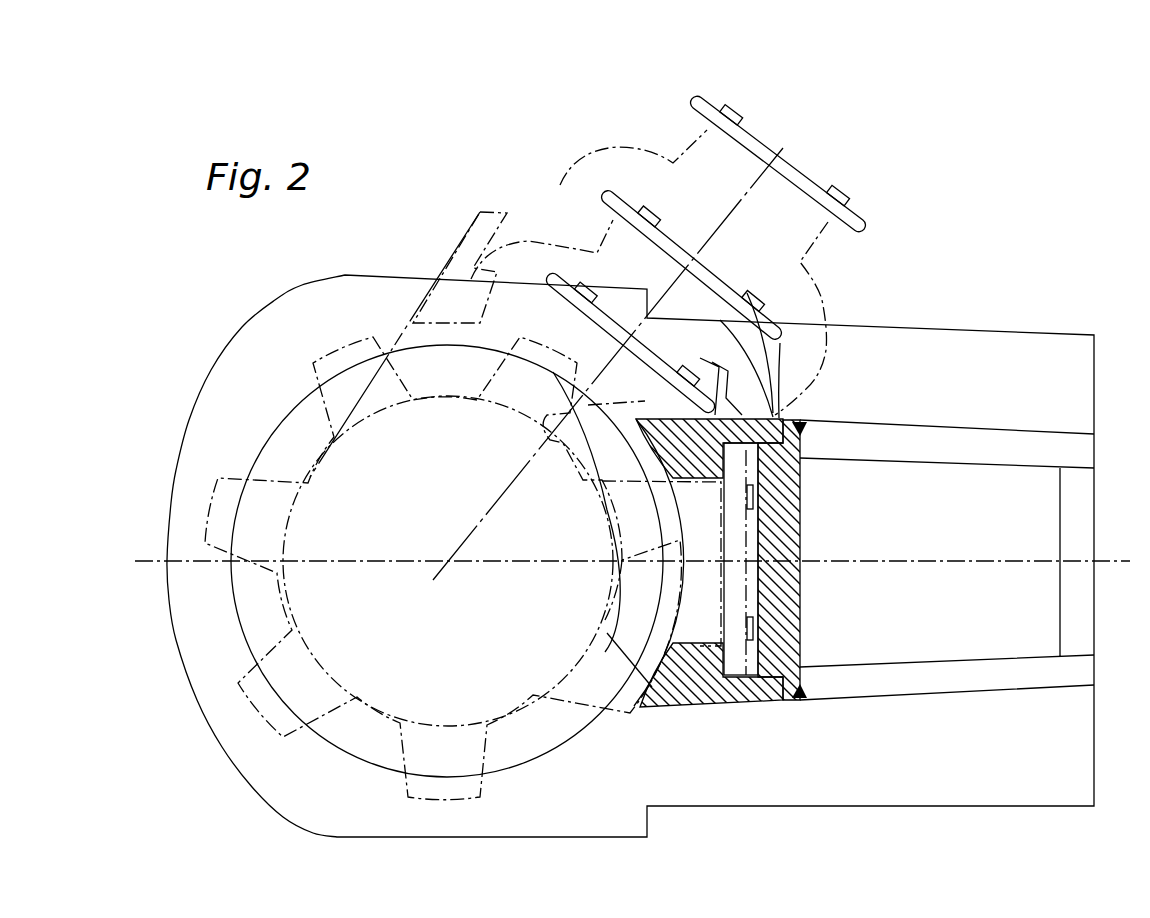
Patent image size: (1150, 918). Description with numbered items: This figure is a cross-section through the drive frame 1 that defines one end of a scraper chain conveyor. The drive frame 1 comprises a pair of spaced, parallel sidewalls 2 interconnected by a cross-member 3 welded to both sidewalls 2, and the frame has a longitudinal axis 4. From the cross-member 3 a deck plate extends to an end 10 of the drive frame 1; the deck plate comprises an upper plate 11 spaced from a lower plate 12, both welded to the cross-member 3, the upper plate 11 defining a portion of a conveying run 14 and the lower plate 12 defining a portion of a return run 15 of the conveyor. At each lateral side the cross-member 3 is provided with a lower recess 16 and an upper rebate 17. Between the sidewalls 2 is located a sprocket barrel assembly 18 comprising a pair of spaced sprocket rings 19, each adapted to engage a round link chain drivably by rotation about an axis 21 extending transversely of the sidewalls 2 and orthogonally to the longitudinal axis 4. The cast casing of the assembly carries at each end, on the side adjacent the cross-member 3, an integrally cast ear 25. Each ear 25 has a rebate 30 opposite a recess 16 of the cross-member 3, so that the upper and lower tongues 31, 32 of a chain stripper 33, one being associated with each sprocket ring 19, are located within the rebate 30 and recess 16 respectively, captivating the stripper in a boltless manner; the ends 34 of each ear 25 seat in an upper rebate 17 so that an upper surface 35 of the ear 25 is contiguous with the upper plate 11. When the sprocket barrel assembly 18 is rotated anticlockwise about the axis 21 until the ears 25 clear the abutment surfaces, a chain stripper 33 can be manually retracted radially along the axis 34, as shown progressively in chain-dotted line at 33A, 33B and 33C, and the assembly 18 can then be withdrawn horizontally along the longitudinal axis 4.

The drive frame 1 is at (919, 311).
The sidewall 2 is at (292, 317).
The cross-member 3 is at (812, 533).
The longitudinal axis 4 is at (940, 560).
The end of the drive frame 10 is at (1094, 397).
The upper plate 11 is at (983, 436).
The lower plate 12 is at (921, 682).
The conveying run 14 is at (950, 399).
The return run 15 is at (870, 767).
The lower recess 16 is at (750, 661).
The upper rebate 17 is at (767, 453).
The sprocket barrel assembly 18 is at (286, 615).
The sprocket ring 19 is at (215, 533).
The axis 21 is at (448, 560).
The ear 25 is at (458, 234).
The rebate 30 is at (783, 397).
The upper tongue 31 is at (740, 469).
The lower tongue 32 is at (737, 655).
The chain stripper 33 is at (608, 534).
The chain stripper first retracted position 33A is at (533, 262).
The chain stripper second retracted position 33B is at (595, 176).
The chain stripper third retracted position 33C is at (776, 136).
The end of the ear 34 is at (737, 218).
The upper surface of the ear 35 is at (710, 373).